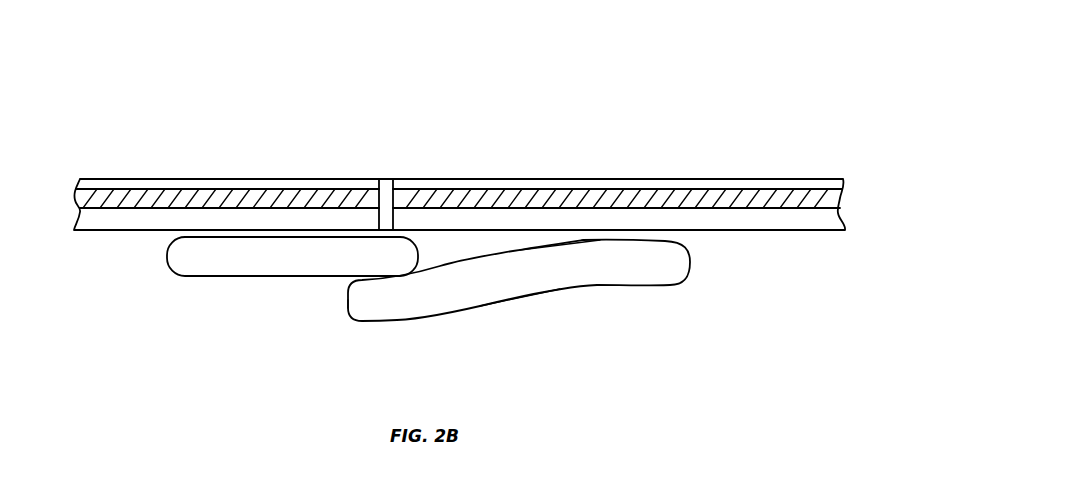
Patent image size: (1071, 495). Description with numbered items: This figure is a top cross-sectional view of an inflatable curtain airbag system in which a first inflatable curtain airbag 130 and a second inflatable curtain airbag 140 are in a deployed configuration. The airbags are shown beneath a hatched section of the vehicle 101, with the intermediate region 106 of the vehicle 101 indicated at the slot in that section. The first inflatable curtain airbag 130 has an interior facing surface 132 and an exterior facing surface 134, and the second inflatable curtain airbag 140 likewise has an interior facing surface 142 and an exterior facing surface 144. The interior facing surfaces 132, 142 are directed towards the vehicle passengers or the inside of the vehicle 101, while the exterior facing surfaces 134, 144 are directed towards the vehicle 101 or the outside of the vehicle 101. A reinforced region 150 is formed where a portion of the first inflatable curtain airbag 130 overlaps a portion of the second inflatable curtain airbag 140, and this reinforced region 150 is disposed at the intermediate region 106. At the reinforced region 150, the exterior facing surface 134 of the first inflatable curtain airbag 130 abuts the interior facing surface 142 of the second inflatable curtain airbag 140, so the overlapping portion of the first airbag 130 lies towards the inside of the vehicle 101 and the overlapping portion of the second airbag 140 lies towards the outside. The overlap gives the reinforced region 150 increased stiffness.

The vehicle 101 is at (170, 138).
The intermediate region 106 is at (385, 163).
The first inflatable curtain airbag 130 is at (587, 271).
The interior facing surface 132 is at (523, 302).
The exterior facing surface 134 is at (557, 238).
The second inflatable curtain airbag 140 is at (227, 260).
The interior facing surface 142 is at (277, 280).
The exterior facing surface 144 is at (308, 237).
The reinforced region 150 is at (364, 330).